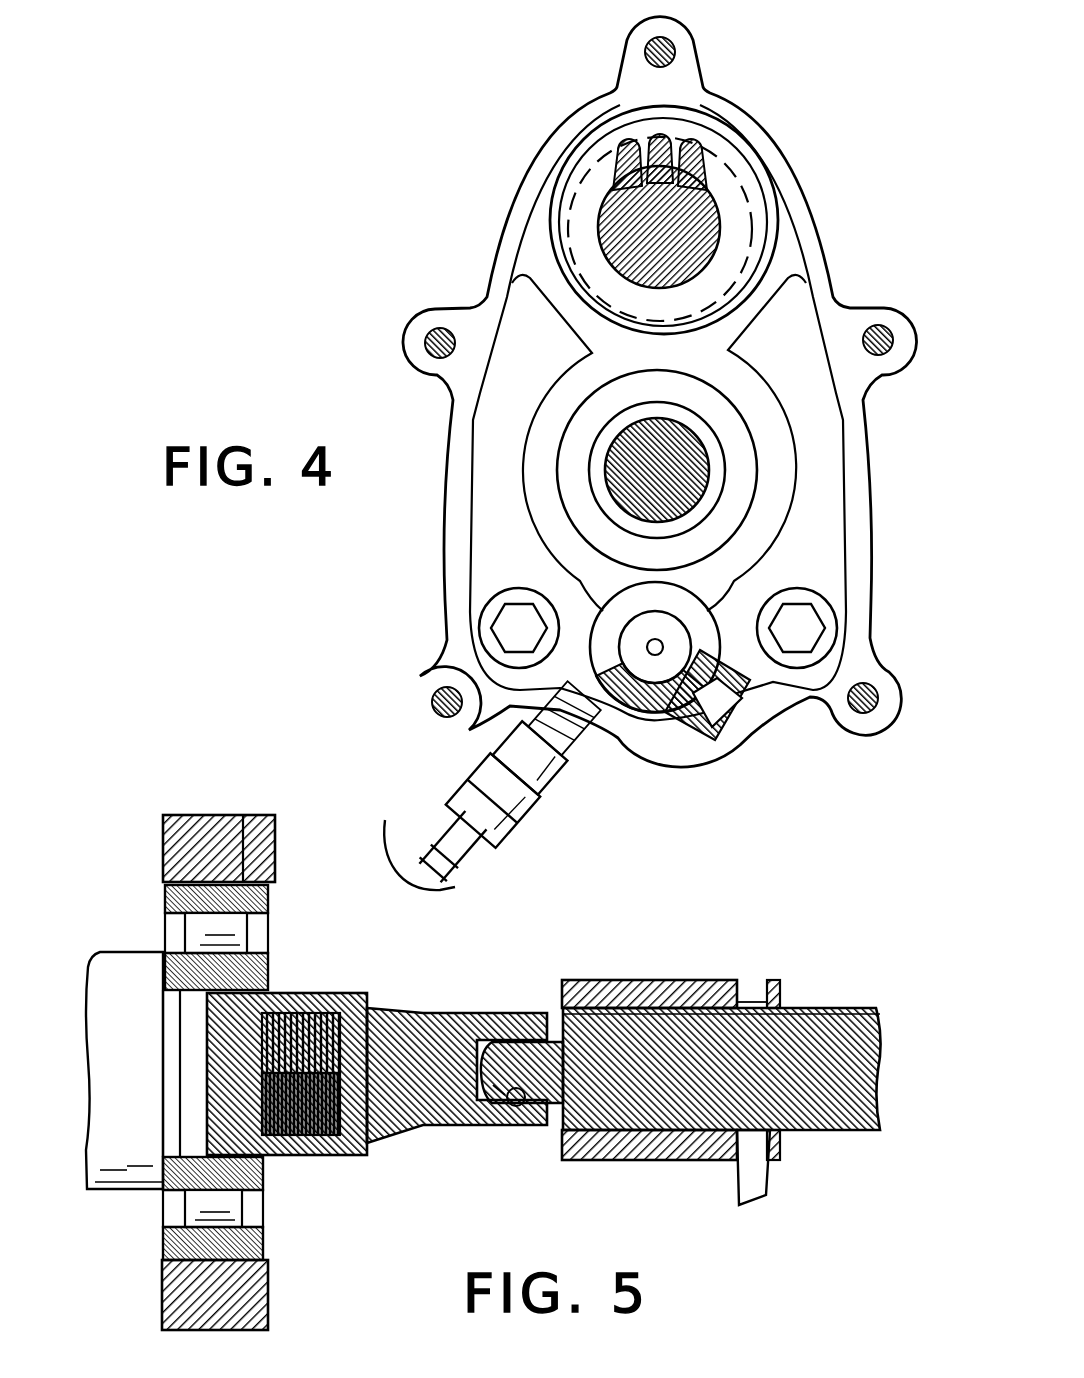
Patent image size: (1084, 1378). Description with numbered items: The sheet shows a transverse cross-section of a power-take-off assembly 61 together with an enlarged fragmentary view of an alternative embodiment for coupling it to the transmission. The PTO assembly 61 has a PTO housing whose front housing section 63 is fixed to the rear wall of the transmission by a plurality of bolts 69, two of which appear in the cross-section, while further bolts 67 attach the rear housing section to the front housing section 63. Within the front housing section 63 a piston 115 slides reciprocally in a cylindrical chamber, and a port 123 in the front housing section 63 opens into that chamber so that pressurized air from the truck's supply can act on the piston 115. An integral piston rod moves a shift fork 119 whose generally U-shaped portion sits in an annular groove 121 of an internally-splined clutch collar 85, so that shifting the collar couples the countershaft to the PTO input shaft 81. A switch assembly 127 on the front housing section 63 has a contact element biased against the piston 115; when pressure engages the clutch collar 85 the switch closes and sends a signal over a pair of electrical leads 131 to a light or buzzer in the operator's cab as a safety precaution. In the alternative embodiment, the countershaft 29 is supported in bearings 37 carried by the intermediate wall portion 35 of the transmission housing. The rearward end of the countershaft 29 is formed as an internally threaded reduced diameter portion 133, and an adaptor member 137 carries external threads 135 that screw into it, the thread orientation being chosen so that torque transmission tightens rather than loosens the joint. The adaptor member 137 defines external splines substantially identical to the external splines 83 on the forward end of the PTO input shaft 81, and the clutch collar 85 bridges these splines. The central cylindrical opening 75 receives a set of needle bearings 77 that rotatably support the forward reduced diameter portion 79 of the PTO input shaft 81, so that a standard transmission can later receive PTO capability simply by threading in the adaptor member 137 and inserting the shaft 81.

In FIG. 5, the countershaft 29 is at (135, 965).
In FIG. 5, the intermediate wall portion 35 is at (198, 830).
In FIG. 5, the bearings 37 is at (235, 1208).
In FIG. 4, the power-take-off assembly 61 is at (485, 283).
In FIG. 4, the front housing section 63 is at (825, 294).
In FIG. 4, the bolts 67 is at (672, 53).
In FIG. 4, the bolts 69 is at (515, 612).
In FIG. 5, the central cylindrical opening 75 is at (521, 1095).
In FIG. 5, the needle bearings 77 is at (520, 1045).
In FIG. 5, the forward reduced diameter portion 79 is at (497, 1090).
In FIG. 4, the PTO input shaft 81 is at (693, 445).
In FIG. 5, the PTO input shaft 81 is at (847, 1017).
In FIG. 5, the external splines 83 is at (657, 1012).
In FIG. 5, the clutch collar 85 is at (620, 1145).
In FIG. 4, the piston 115 is at (663, 630).
In FIG. 5, the shift fork 119 is at (757, 1183).
In FIG. 5, the annular groove 121 is at (750, 1002).
In FIG. 4, the port 123 is at (719, 705).
In FIG. 4, the switch assembly 127 is at (580, 808).
In FIG. 4, the electrical leads 131 is at (425, 850).
In FIG. 5, the reduced diameter portion 133 is at (290, 997).
In FIG. 5, the external threads 135 is at (334, 1074).
In FIG. 5, the adaptor member 137 is at (457, 1030).